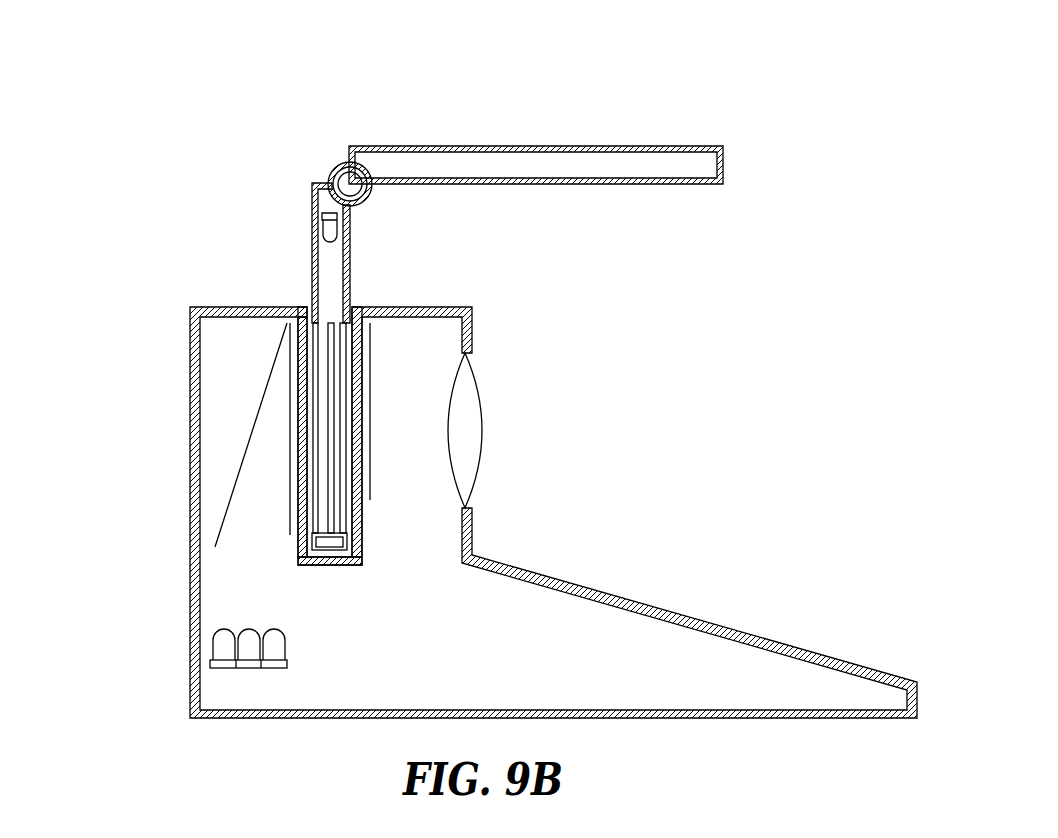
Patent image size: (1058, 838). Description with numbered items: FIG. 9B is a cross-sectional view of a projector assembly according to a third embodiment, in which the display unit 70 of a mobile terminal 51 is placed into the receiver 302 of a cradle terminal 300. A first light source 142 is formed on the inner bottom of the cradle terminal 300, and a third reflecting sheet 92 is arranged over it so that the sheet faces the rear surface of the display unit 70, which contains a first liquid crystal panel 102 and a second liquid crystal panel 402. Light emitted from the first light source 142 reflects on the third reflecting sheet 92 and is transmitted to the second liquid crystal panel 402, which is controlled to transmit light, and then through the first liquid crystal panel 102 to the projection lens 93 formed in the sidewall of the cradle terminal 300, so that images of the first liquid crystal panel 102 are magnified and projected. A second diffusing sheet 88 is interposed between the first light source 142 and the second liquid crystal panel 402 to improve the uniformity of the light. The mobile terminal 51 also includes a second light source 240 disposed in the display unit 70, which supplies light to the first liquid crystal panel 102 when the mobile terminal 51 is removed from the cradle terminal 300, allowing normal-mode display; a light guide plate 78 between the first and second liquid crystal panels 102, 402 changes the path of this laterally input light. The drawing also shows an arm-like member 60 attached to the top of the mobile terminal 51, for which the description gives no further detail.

The mobile terminal 51 is at (291, 120).
The arm 60 is at (508, 120).
The second light source 240 is at (313, 218).
The second liquid crystal panel 402 is at (312, 347).
The receiver 302 is at (380, 307).
The projection lens 93 is at (478, 368).
The third reflecting sheet 92 is at (250, 438).
The cradle terminal 300 is at (190, 488).
The second diffusing sheet 88 is at (292, 522).
The first liquid crystal panel 102 is at (348, 494).
The light guide plate 78 is at (356, 565).
The display unit 70 is at (328, 552).
The first light source 142 is at (220, 662).